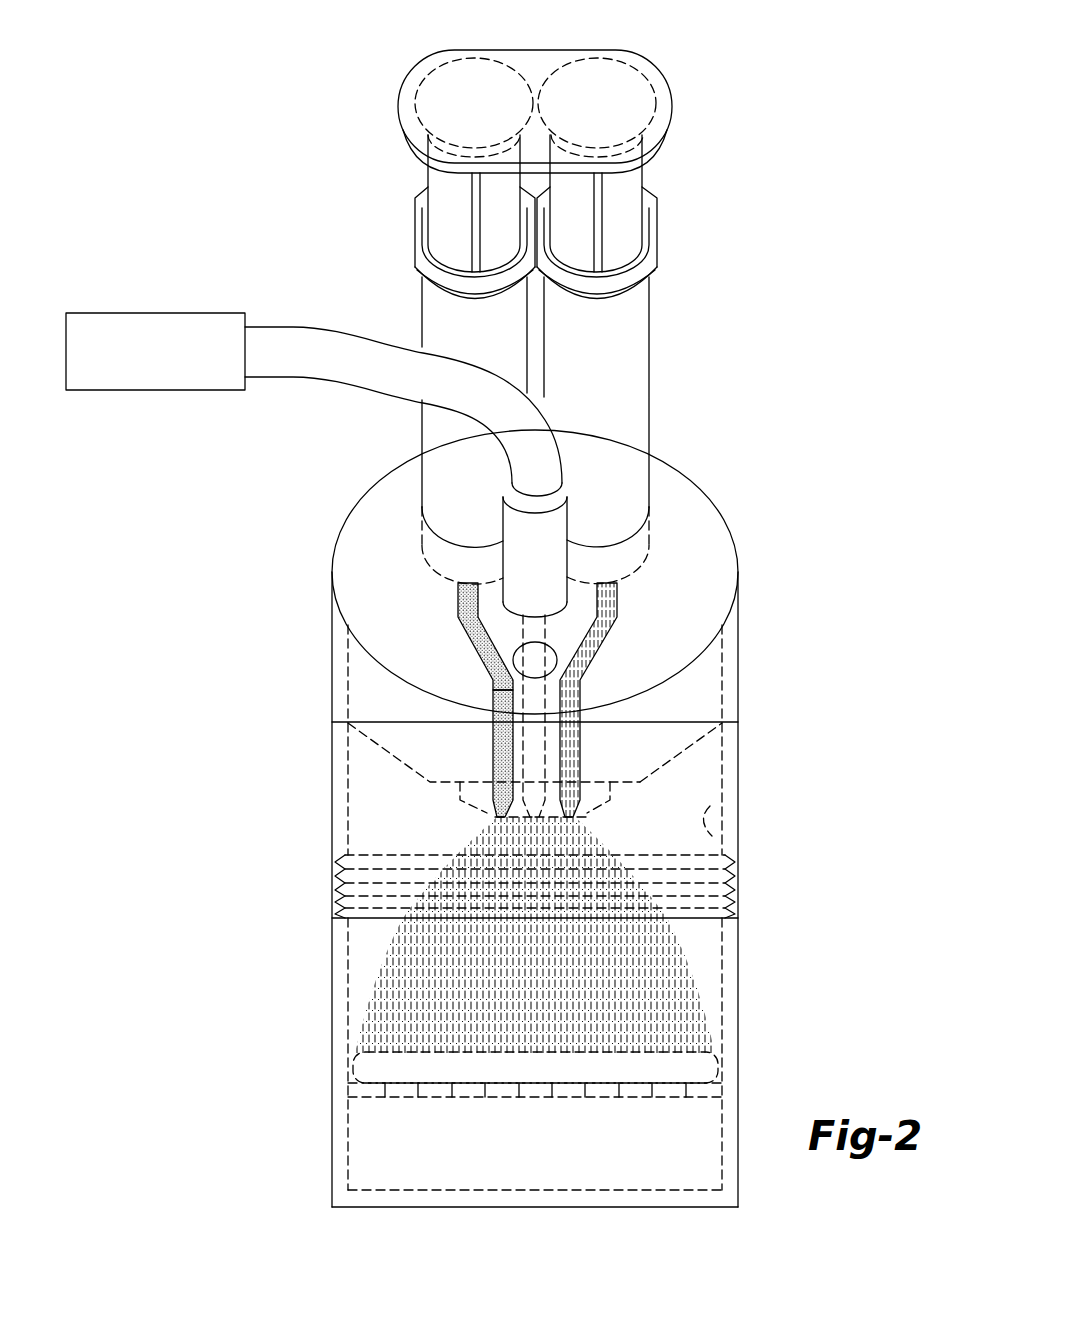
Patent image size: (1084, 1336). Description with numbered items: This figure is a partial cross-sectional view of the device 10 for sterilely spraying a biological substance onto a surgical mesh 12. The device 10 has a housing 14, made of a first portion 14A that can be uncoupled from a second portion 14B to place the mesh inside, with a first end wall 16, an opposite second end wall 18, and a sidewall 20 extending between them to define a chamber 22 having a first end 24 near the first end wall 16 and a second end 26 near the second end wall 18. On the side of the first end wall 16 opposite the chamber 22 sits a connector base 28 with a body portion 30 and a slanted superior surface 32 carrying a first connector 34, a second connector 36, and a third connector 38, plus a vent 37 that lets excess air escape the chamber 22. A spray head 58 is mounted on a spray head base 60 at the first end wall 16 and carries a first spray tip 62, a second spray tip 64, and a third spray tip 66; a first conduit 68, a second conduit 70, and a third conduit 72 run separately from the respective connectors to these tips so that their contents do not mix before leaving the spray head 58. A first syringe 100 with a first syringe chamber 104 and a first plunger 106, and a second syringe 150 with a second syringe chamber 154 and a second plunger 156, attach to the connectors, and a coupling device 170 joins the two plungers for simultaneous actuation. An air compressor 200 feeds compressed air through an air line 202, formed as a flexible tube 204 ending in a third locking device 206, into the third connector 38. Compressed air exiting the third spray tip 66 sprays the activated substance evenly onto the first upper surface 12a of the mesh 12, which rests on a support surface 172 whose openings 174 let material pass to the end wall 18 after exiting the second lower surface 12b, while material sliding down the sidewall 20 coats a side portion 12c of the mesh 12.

The device 10 is at (184, 892).
The surgical mesh 12 is at (561, 1086).
The first upper surface 12a is at (682, 1055).
The second lower surface 12b is at (693, 1100).
The side portion 12c is at (718, 1068).
The housing 14 is at (322, 880).
The first portion 14A is at (340, 825).
The second portion 14B is at (735, 1000).
The first end wall 16 is at (695, 728).
The second end wall 18 is at (372, 1187).
The sidewall 20 is at (712, 836).
The chamber 22 is at (360, 957).
The first end 24 is at (695, 787).
The second end 26 is at (592, 1173).
The connector base 28 is at (712, 662).
The body portion 30 is at (340, 653).
The superior surface 32 is at (695, 477).
The first connector 34 is at (622, 582).
The second connector 36 is at (430, 563).
The vent 37 is at (513, 654).
The third connector 38 is at (555, 612).
The spray head 58 is at (483, 813).
The spray head base 60 is at (385, 746).
The first spray tip 62 is at (587, 825).
The second spray tip 64 is at (493, 817).
The third spray tip 66 is at (477, 837).
The first conduit 68 is at (582, 757).
The second conduit 70 is at (490, 750).
The third conduit 72 is at (508, 683).
The first syringe 100 is at (641, 367).
The first syringe chamber 104 is at (646, 362).
The first plunger 106 is at (627, 198).
The second syringe 150 is at (417, 367).
The second syringe chamber 154 is at (428, 456).
The second plunger 156 is at (442, 192).
The coupling device 170 is at (560, 55).
The support surface 172 is at (520, 1097).
The openings 174 is at (385, 1085).
The air compressor 200 is at (180, 312).
The air line 202 is at (268, 386).
The flexible tube 204 is at (282, 333).
The third locking device 206 is at (555, 527).